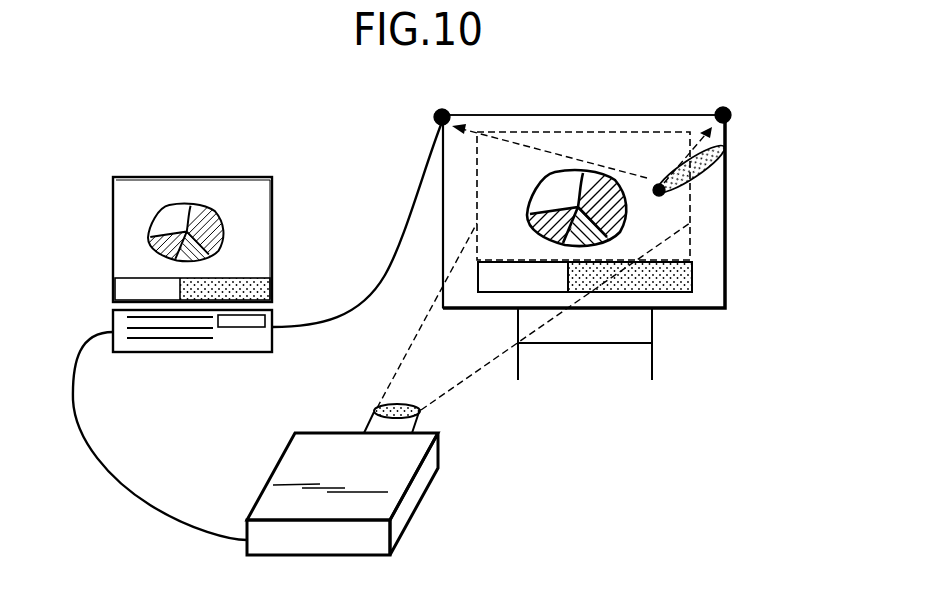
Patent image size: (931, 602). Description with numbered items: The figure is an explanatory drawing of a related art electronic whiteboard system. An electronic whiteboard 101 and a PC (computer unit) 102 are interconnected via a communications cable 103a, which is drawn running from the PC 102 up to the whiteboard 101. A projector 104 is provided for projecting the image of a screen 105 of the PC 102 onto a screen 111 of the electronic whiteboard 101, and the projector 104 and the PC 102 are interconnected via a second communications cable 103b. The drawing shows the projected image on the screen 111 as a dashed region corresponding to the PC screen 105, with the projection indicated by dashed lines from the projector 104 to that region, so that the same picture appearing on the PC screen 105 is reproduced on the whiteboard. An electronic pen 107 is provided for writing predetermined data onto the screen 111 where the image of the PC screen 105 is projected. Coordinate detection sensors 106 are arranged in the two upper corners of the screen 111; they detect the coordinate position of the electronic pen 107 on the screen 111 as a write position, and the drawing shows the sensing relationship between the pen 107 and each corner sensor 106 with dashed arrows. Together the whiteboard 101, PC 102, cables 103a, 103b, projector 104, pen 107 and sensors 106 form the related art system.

The electronic whiteboard 101 is at (712, 291).
The PC (computer unit) 102 is at (238, 334).
The communications cable 103a is at (325, 316).
The communications cable 103b is at (141, 503).
The projector 104 is at (418, 487).
The screen of PC 105 is at (689, 240).
The coordinate detection sensors 106 is at (725, 112).
The electronic pen 107 is at (720, 151).
The screen 111 is at (712, 194).